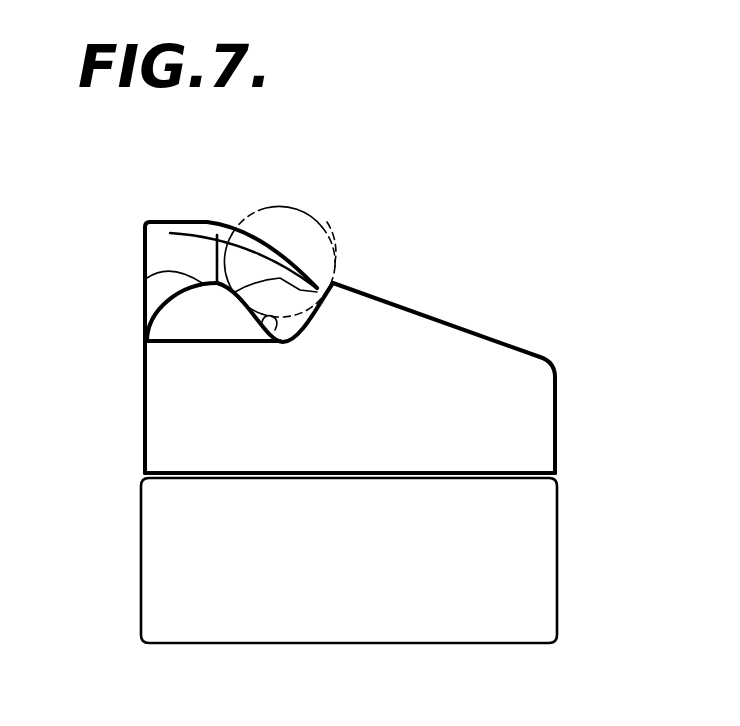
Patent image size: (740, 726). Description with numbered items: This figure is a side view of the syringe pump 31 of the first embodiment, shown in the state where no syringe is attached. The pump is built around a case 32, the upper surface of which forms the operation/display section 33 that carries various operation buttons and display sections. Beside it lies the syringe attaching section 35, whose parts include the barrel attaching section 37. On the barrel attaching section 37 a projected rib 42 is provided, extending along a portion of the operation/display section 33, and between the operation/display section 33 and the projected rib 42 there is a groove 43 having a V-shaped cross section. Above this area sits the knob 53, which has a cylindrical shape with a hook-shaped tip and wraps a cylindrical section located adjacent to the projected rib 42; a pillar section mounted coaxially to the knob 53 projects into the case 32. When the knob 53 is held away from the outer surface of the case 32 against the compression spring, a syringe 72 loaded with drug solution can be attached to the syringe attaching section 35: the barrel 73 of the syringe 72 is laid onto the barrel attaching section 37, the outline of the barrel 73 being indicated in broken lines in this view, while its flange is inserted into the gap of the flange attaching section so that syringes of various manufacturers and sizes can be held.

The syringe pump 31 is at (423, 212).
The case 32 is at (557, 407).
The operation/display section 33 is at (468, 325).
The syringe attaching section 35 is at (130, 228).
The barrel attaching section 37 is at (357, 262).
The projected rib 42 is at (147, 278).
The groove 43 is at (262, 322).
The knob 53 is at (208, 222).
The syringe 72 is at (318, 212).
The barrel 73 is at (328, 222).